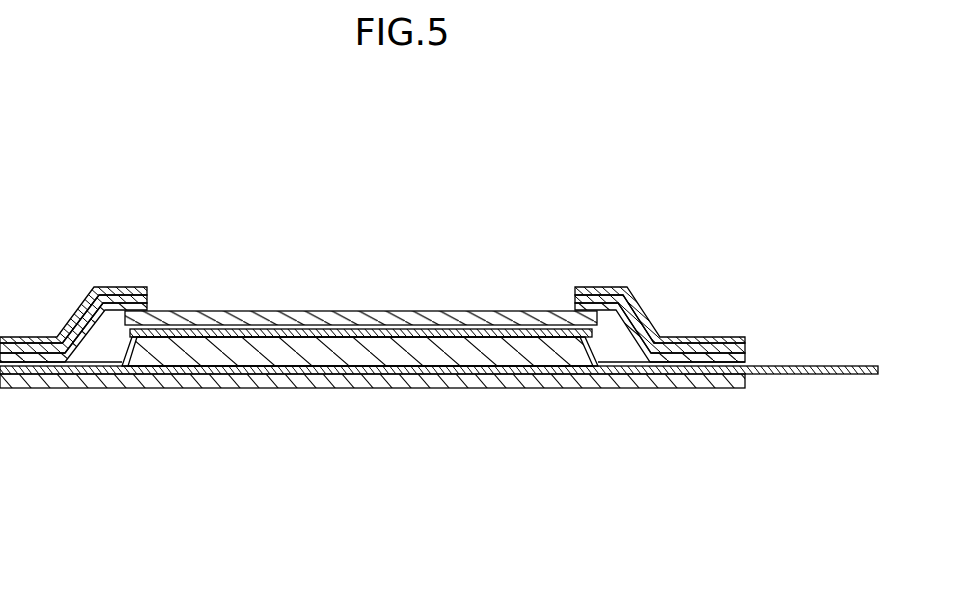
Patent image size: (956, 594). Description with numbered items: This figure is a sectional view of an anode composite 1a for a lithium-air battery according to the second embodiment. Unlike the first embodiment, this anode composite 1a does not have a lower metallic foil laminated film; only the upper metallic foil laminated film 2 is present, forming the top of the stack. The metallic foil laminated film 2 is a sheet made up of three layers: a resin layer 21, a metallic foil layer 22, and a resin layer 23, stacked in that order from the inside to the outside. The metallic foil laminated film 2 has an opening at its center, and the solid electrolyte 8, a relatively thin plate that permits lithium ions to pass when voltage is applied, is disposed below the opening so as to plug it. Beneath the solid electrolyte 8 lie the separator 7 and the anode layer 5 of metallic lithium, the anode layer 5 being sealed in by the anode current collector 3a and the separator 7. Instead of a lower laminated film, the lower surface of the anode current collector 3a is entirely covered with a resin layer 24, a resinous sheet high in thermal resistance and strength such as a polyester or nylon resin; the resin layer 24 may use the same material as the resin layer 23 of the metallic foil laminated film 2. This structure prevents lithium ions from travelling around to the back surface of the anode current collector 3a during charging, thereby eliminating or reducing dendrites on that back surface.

The anode composite 1a is at (681, 238).
The metallic foil laminated film 2 is at (72, 178).
The resin layer 21 is at (143, 306).
The metallic foil layer 22 is at (131, 297).
The resin layer 23 is at (94, 288).
The anode layer 5 is at (474, 347).
The separator 7 is at (338, 333).
The solid electrolyte 8 is at (251, 315).
The resin layer 24 is at (382, 385).
The anode current collector 3a is at (792, 370).